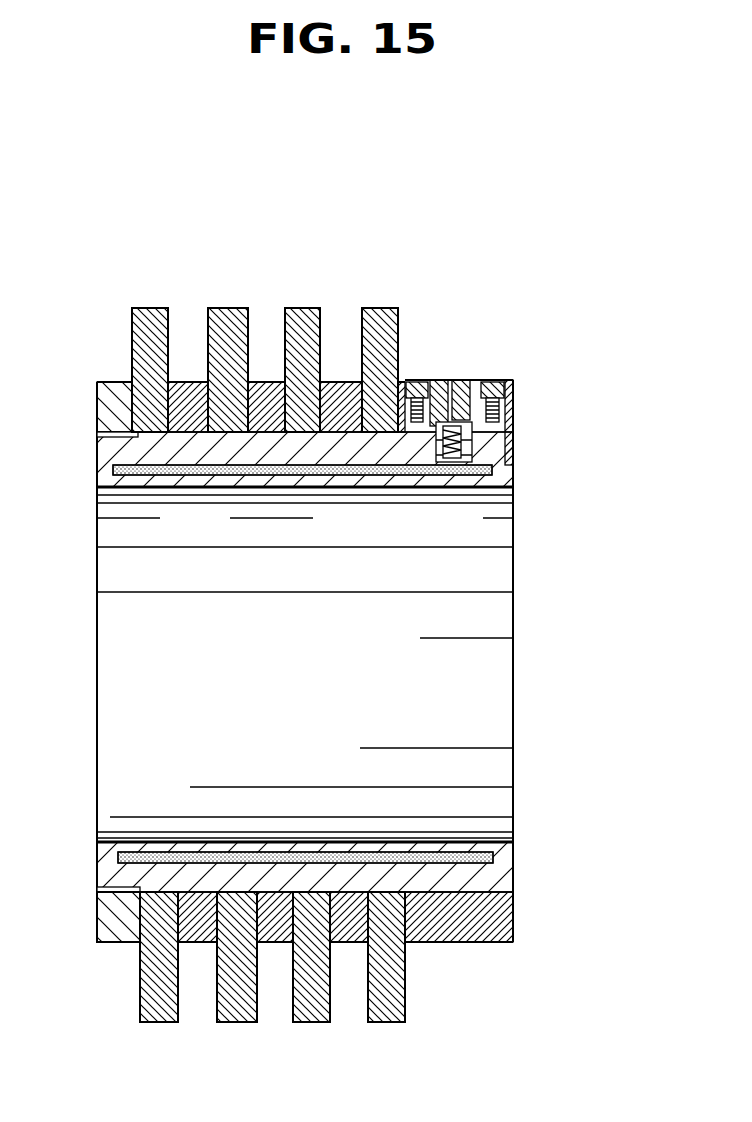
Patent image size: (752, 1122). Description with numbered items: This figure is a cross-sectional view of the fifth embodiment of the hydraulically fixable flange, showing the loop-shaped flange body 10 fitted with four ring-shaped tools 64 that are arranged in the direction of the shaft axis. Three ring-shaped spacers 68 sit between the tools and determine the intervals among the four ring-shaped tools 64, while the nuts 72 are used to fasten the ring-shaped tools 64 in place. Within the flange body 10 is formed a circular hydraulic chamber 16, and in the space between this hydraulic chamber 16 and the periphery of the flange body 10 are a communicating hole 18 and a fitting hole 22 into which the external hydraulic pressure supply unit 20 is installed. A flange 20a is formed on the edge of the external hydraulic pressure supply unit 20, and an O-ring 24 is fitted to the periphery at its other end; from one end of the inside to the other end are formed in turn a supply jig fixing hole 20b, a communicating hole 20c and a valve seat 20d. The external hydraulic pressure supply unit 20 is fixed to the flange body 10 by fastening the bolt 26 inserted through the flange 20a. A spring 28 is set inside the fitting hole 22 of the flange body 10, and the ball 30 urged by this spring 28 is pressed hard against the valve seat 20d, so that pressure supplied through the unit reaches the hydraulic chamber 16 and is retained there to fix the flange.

The flange body 10 is at (203, 453).
The hydraulic chamber 16 is at (335, 470).
The communicating hole 18 is at (450, 478).
The external hydraulic pressure supply unit 20 is at (470, 385).
The flange 20a is at (508, 390).
The supply jig fixing hole 20b is at (452, 388).
The communicating hole 20c is at (472, 438).
The valve seat 20d is at (472, 456).
The fitting hole 22 is at (433, 478).
The O-ring 24 is at (405, 477).
The bolt 26 is at (492, 383).
The spring 28 is at (498, 468).
The ball 30 is at (462, 446).
The ring-shaped tool 64 is at (362, 322).
The ring-shaped spacer 68 is at (352, 947).
The nut 72 is at (110, 920).